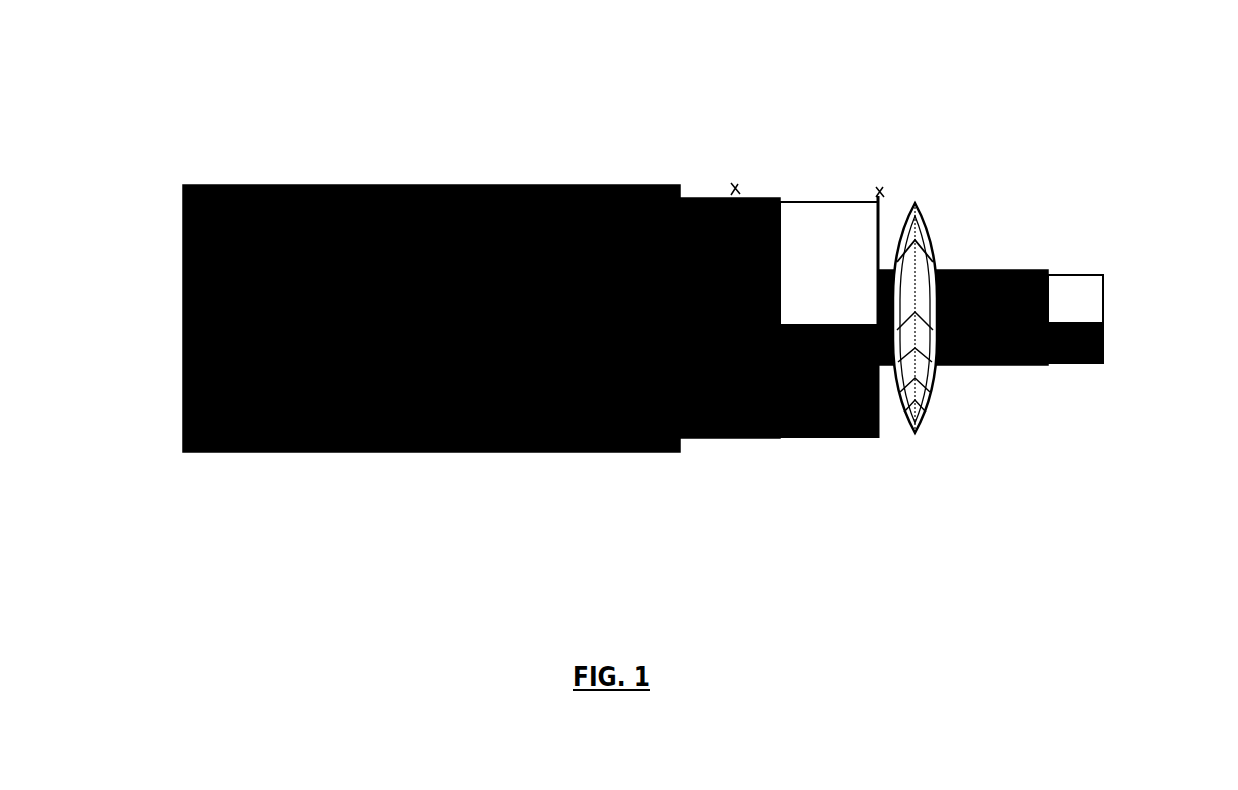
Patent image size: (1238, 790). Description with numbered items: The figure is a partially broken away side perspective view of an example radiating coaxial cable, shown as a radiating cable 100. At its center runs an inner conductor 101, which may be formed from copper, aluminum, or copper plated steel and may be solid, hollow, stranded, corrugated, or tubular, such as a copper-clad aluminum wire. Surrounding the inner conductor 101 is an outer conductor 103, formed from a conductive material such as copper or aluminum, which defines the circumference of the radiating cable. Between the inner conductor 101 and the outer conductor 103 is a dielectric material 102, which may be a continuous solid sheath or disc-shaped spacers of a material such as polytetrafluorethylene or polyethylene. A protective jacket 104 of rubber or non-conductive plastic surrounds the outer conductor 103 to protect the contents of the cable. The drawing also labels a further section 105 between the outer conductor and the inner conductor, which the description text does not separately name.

The radiating cable 100 is at (188, 184).
The inner conductor 101 is at (1040, 368).
The dielectric material 102 is at (935, 228).
The outer conductor 103 is at (723, 188).
The protective jacket 104 is at (284, 187).
The dielectric insulator 105 is at (845, 217).